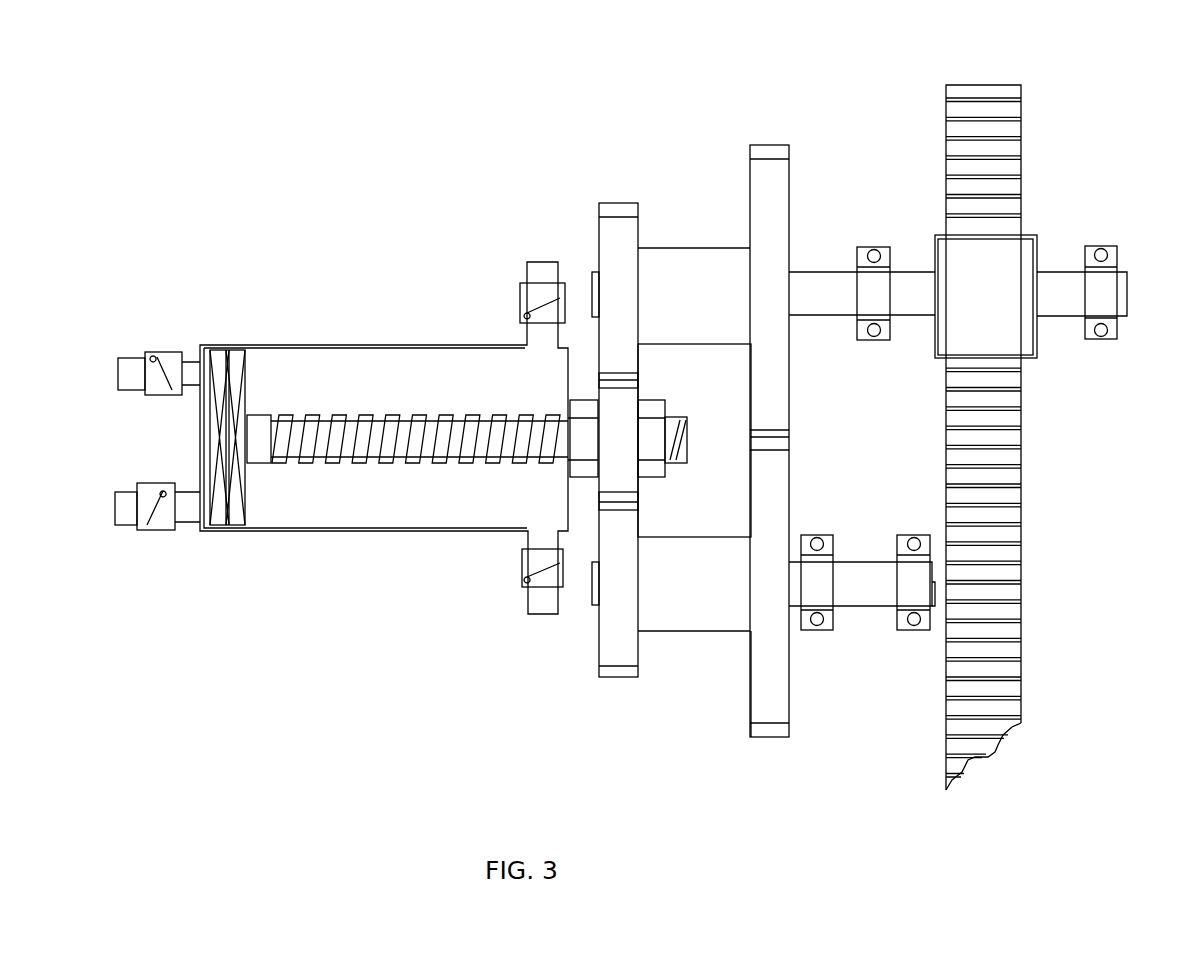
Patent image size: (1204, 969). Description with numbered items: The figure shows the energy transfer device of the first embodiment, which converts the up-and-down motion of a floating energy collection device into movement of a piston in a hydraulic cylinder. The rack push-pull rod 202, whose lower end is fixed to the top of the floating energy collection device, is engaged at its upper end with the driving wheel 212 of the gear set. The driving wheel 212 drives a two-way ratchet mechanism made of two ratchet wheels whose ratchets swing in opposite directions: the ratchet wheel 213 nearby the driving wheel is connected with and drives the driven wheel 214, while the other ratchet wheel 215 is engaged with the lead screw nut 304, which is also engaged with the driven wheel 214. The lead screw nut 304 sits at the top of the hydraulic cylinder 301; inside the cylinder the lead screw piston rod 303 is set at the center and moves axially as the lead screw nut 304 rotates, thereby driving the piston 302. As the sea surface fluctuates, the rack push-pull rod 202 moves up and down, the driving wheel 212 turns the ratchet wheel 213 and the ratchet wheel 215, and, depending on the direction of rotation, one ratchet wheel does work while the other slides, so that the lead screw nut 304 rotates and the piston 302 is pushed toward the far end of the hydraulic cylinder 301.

The rack push-pull rod 202 is at (1010, 190).
The driving wheel 212 is at (1020, 283).
The ratchet wheel 213 is at (762, 275).
The driven wheel 214 is at (767, 675).
The ratchet wheel 215 is at (617, 210).
The hydraulic cylinder 301 is at (348, 337).
The piston 302 is at (237, 376).
The lead screw piston rod 303 is at (415, 435).
The lead screw nut 304 is at (618, 462).